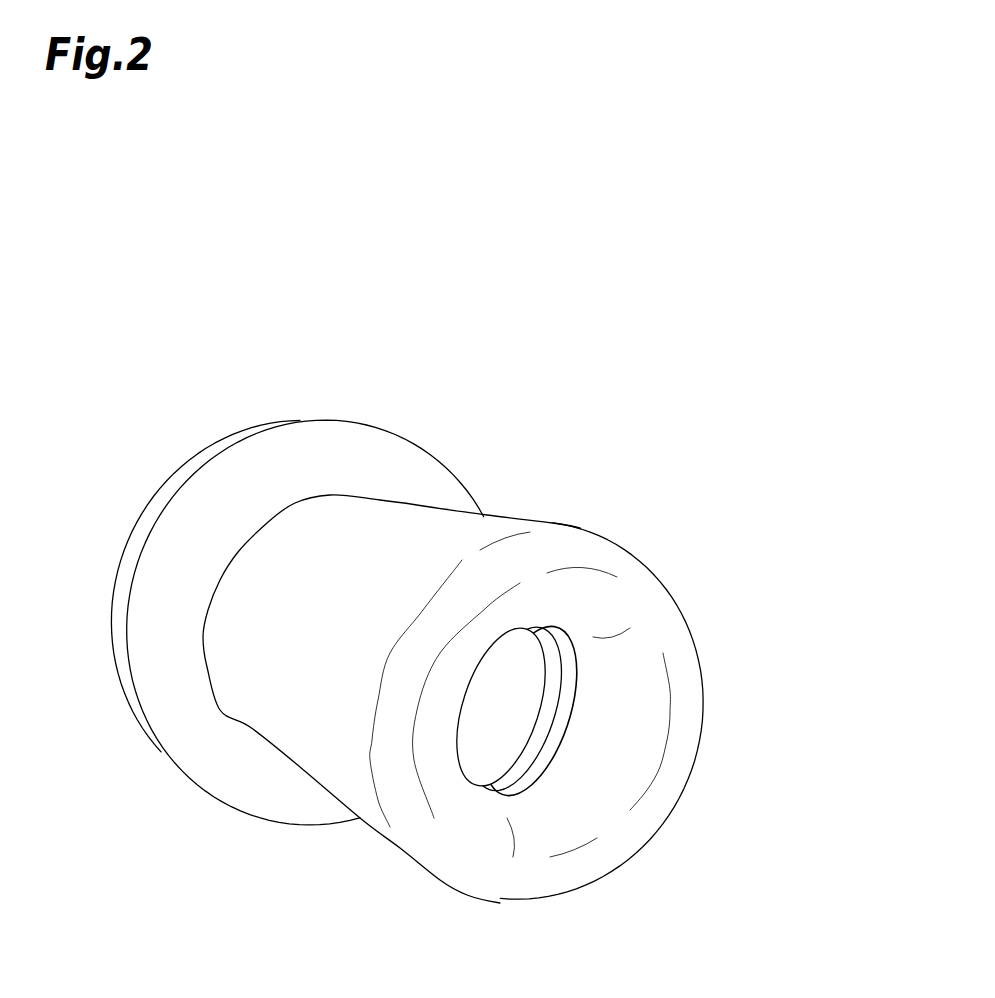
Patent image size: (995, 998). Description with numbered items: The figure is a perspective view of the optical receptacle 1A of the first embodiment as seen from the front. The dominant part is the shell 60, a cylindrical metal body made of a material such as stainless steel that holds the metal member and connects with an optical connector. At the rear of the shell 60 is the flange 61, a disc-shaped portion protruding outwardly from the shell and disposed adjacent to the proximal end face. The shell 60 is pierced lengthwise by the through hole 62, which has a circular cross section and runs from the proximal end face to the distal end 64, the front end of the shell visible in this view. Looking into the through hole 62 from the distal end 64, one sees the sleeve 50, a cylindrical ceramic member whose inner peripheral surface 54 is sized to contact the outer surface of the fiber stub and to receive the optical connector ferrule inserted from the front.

The optical receptacle 1A is at (592, 288).
The sleeve 50 is at (551, 690).
The inner peripheral surface 54 is at (478, 733).
The shell 60 is at (553, 523).
The flange 61 is at (353, 450).
The through hole 62 is at (560, 778).
The distal end 64 is at (530, 890).